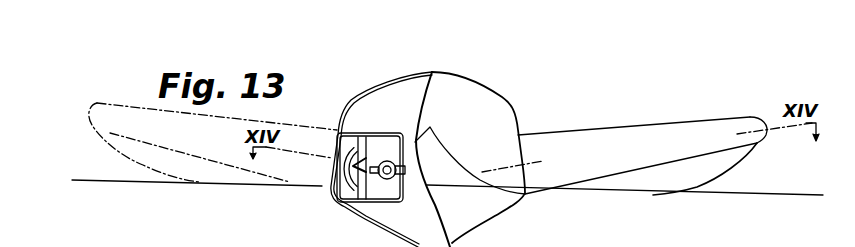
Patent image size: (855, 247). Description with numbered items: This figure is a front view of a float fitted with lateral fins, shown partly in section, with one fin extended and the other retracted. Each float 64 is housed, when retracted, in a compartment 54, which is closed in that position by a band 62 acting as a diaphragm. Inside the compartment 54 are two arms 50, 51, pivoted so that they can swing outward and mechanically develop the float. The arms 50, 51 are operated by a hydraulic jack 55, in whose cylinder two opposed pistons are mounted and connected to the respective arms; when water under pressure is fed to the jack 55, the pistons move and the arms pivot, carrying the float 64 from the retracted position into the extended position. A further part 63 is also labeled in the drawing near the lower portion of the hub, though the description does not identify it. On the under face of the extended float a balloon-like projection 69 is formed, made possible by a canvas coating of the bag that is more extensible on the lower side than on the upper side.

The arm 50 is at (345, 140).
The arm 51 is at (374, 147).
The compartment 54 is at (416, 138).
The hydraulic jack 55 is at (388, 180).
The band 62 is at (340, 203).
The hub lower portion 63 is at (551, 240).
The float 64 is at (175, 138).
The balloon-like projection 69 is at (713, 170).